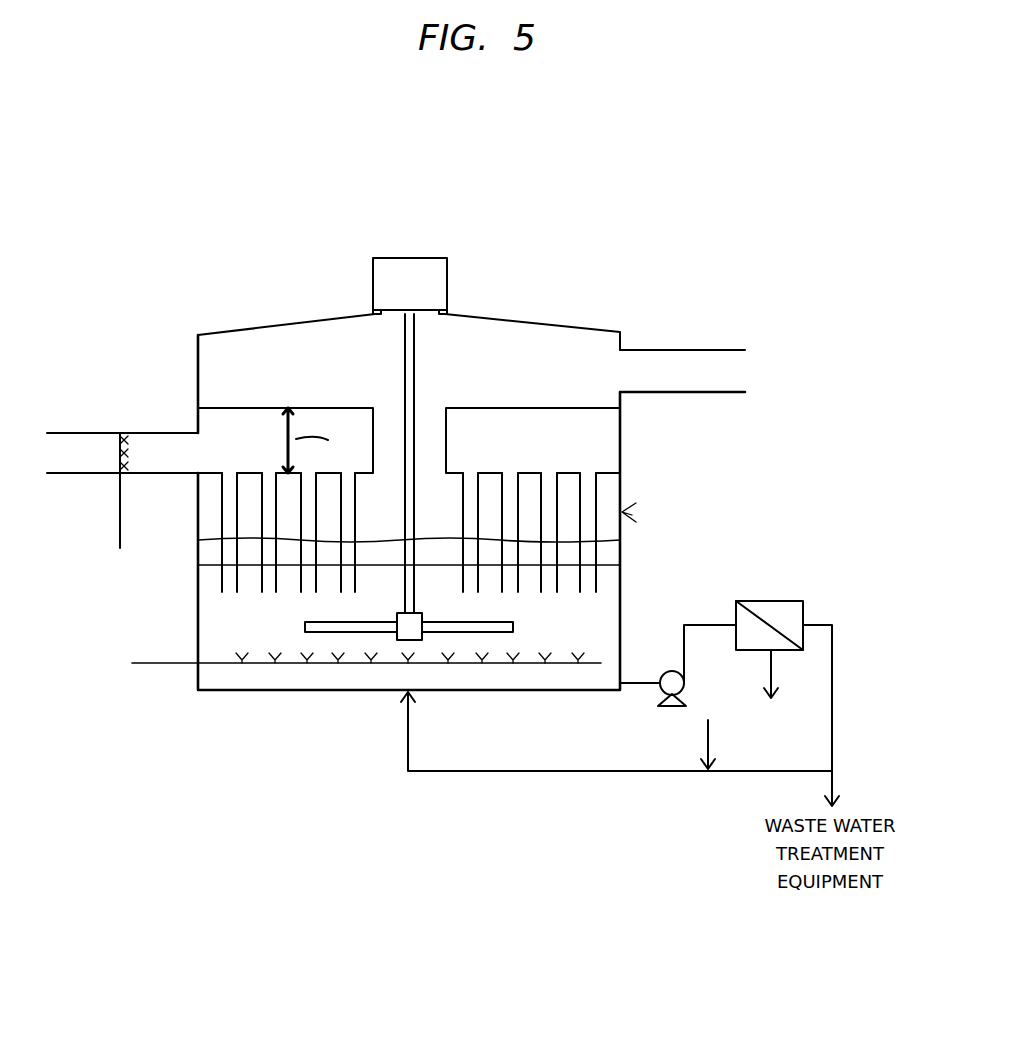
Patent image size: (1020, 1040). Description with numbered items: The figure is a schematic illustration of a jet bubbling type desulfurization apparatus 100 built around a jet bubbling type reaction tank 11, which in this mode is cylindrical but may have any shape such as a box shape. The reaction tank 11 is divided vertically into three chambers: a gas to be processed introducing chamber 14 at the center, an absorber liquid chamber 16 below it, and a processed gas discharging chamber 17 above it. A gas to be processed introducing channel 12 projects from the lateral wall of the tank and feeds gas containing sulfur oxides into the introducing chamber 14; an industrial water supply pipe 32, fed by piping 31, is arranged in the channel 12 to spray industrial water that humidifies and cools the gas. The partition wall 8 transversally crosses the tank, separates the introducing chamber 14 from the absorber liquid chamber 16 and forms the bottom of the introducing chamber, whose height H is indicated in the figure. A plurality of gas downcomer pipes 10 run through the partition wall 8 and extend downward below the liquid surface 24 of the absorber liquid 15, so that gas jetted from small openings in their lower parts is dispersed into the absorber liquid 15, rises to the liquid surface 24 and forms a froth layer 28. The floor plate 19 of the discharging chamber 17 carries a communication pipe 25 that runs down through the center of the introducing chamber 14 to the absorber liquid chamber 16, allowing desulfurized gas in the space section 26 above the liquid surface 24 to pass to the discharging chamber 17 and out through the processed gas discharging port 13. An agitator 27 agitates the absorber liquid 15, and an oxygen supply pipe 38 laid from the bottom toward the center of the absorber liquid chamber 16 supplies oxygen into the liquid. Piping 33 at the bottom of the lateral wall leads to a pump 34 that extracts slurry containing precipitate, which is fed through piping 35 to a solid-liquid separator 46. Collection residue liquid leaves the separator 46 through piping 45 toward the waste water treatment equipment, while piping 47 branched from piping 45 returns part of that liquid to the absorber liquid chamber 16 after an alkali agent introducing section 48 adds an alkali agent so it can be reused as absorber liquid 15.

The jet bubbling type desulfurization apparatus 100 is at (705, 218).
The partition wall 8 is at (254, 472).
The gas downcomer pipe 10 is at (260, 510).
The jet bubbling type reaction tank 11 is at (214, 333).
The gas to be processed introducing channel 12 is at (63, 433).
The processed gas discharging port 13 is at (700, 350).
The gas to be processed introducing chamber 14 is at (237, 433).
The absorber liquid 15 is at (293, 675).
The absorber liquid chamber 16 is at (197, 628).
The processed gas discharging chamber 17 is at (594, 350).
The floor plate 19 is at (343, 405).
The liquid surface 24 is at (215, 565).
The communication pipe 25 is at (427, 430).
The space section 26 is at (205, 490).
The agitator 27 is at (513, 627).
The froth layer 28 is at (205, 546).
The piping 31 is at (120, 500).
The industrial water supply pipe 32 is at (112, 445).
The piping 33 is at (645, 683).
The pump 34 is at (670, 706).
The piping 35 is at (684, 640).
The oxygen supply pipe 38 is at (222, 666).
The piping 45 is at (832, 625).
The solid-liquid separator 46 is at (790, 650).
The piping 47 is at (665, 771).
The alkali agent introducing section 48 is at (712, 745).